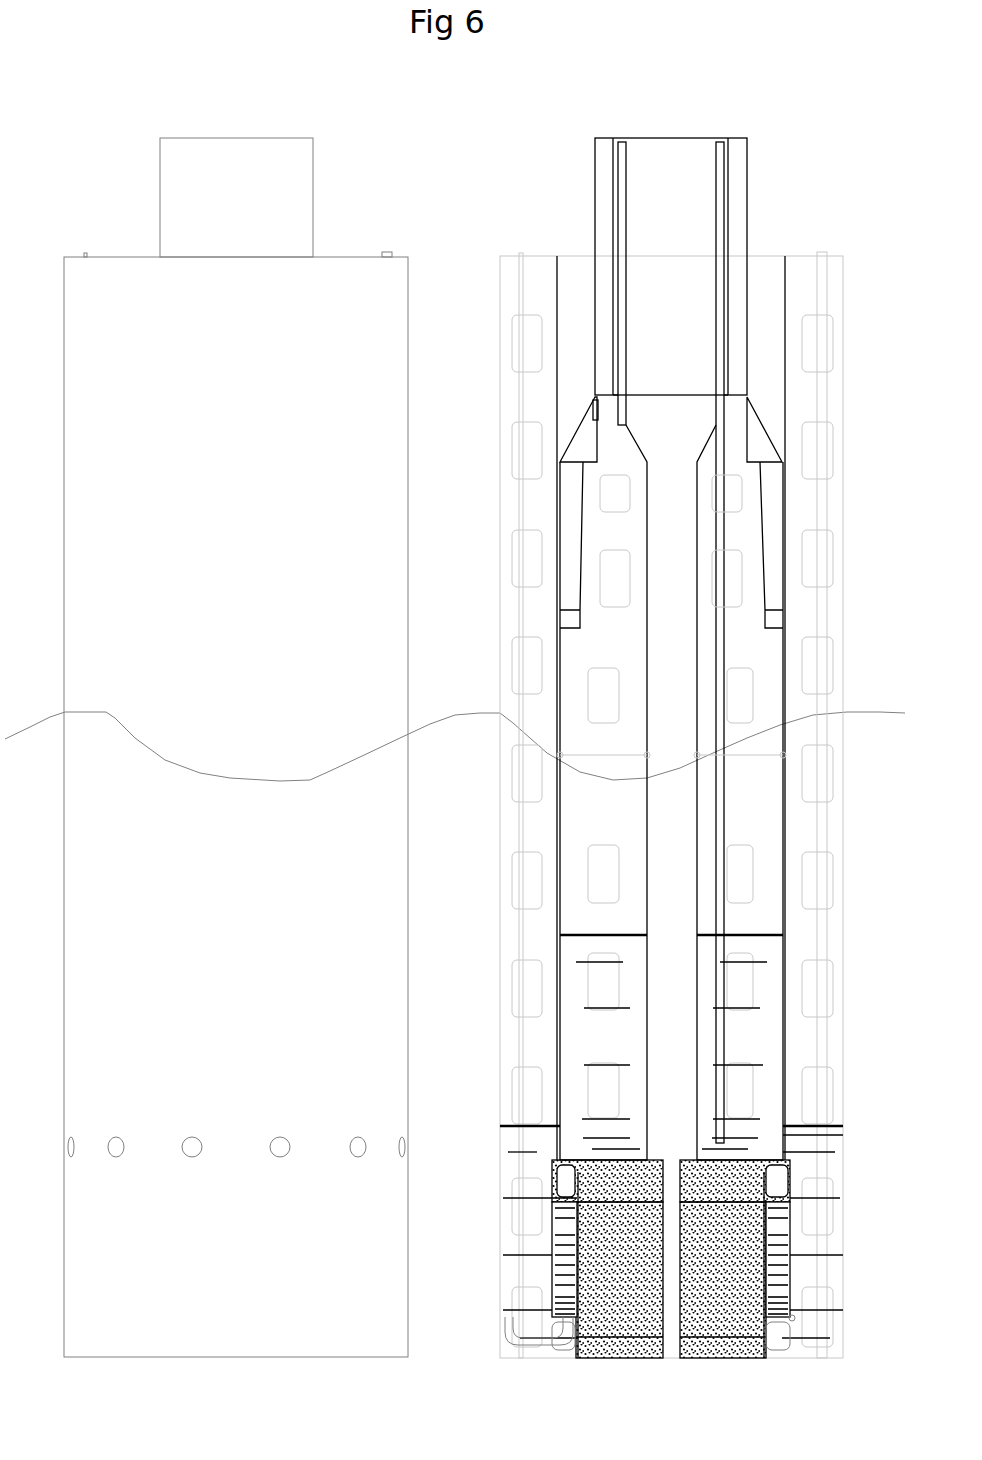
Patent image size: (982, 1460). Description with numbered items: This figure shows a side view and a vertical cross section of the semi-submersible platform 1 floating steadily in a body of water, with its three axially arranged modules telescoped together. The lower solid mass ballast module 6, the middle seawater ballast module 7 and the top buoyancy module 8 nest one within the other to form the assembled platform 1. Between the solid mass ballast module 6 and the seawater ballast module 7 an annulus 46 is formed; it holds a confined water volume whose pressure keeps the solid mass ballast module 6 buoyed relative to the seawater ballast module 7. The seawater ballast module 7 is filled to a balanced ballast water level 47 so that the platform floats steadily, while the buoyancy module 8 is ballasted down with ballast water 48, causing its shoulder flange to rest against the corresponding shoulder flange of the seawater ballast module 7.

The semi-submersible platform 1 is at (843, 290).
The solid mass ballast module 6 is at (767, 1257).
The seawater ballast module 7 is at (843, 500).
The buoyancy module 8 is at (747, 158).
The annulus 46 is at (565, 1270).
The balanced ballast water level 47 is at (538, 1130).
The ballast water 48 is at (595, 937).